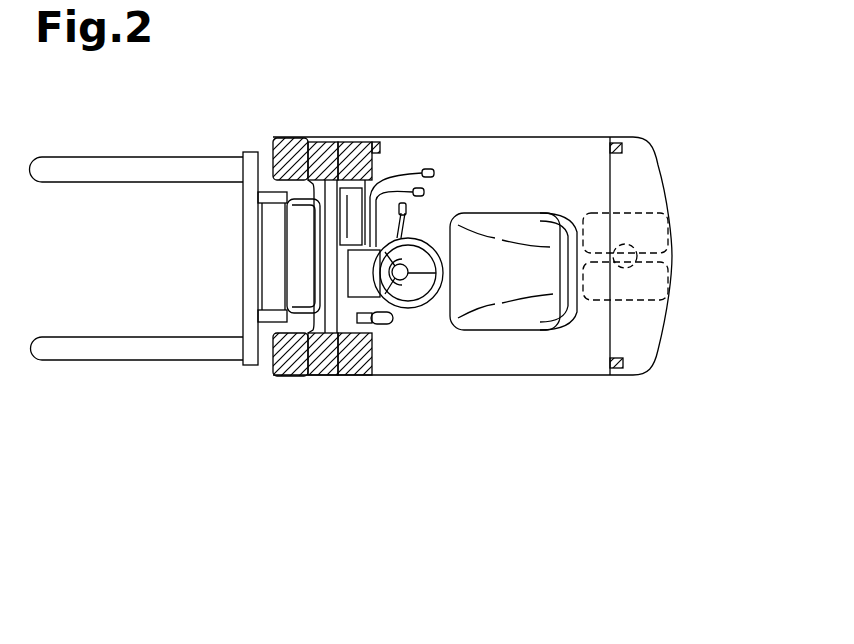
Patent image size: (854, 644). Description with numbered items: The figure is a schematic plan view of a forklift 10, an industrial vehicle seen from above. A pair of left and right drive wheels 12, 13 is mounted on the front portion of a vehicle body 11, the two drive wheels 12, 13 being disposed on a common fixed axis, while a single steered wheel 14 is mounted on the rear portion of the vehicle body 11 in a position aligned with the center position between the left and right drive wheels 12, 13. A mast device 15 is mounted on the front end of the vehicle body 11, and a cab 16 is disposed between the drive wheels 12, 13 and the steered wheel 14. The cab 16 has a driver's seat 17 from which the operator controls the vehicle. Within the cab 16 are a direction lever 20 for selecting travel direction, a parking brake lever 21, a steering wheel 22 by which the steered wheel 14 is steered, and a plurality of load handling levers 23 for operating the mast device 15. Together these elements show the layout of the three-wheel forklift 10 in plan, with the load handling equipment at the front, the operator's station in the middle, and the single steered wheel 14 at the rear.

The forklift 10 is at (657, 104).
The vehicle body 11 is at (545, 137).
The drive wheel 12 is at (293, 377).
The drive wheel 13 is at (287, 137).
The steered wheel 14 is at (668, 228).
The mast device 15 is at (226, 266).
The cab 16 is at (449, 152).
The driver's seat 17 is at (508, 320).
The direction lever 20 is at (410, 217).
The parking brake lever 21 is at (391, 325).
The steering wheel 22 is at (430, 307).
The load handling levers 23 is at (434, 173).